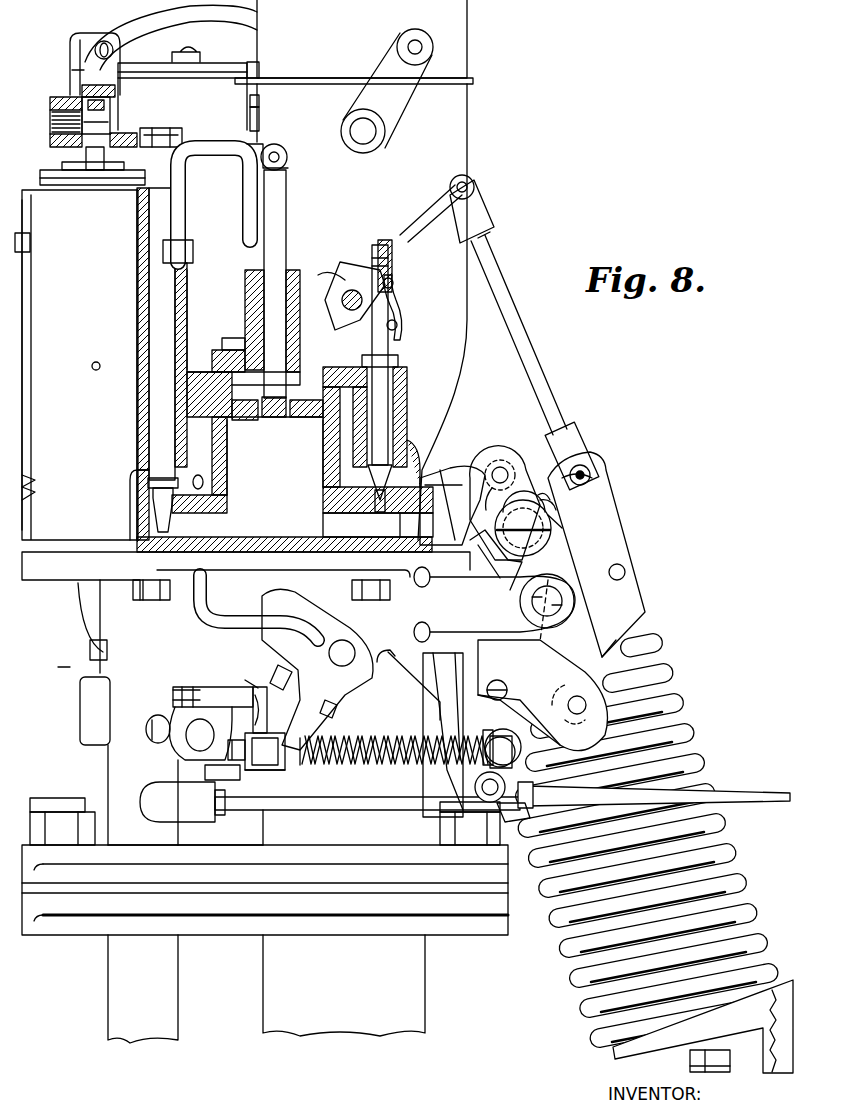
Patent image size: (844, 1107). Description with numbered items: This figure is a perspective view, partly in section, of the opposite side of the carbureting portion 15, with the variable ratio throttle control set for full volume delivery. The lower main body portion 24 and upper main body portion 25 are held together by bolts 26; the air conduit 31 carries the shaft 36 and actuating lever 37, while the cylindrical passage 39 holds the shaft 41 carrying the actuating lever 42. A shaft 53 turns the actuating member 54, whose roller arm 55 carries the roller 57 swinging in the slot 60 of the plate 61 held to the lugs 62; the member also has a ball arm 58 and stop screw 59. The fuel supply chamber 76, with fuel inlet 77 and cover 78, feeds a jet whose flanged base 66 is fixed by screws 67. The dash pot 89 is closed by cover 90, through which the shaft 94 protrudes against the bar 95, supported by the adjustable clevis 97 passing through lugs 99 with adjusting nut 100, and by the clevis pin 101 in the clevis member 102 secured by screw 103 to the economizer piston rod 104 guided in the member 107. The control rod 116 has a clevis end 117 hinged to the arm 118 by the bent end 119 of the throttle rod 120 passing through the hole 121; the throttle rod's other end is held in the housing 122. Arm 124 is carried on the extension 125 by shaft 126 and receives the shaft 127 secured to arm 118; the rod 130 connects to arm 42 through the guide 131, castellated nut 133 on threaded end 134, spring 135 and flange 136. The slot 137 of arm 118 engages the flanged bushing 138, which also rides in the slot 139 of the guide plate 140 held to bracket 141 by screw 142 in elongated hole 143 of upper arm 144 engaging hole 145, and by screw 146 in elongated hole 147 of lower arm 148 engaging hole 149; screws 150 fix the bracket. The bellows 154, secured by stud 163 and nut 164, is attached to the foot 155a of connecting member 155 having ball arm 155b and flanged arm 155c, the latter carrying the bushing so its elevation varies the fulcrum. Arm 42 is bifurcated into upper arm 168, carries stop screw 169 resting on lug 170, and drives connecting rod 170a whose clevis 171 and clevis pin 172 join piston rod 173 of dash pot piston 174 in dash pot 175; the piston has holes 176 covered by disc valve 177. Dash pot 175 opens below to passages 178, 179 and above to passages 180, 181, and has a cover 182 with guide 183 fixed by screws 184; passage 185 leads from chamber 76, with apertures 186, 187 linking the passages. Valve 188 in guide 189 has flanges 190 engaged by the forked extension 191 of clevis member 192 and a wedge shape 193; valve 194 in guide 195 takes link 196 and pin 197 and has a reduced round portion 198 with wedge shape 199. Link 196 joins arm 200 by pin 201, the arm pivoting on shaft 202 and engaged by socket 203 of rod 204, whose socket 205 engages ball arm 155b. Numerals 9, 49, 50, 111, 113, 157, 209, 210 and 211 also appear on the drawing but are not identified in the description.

The frame section 9 is at (64, 660).
The carbureting portion 15 is at (509, 240).
The lower main body portion 24 is at (95, 762).
The upper main body portion 25 is at (470, 152).
The bolts 26 is at (155, 596).
The air conduit 31 is at (354, 94).
The shaft 36 is at (363, 131).
The actuating lever 37 is at (388, 88).
The cylindrical passage 39 is at (269, 832).
The shaft 41 is at (342, 653).
The actuating lever 42 is at (327, 695).
The base portion 49 is at (143, 834).
The curved wall 50 is at (98, 605).
The shaft 53 is at (232, 780).
The actuating member 54 is at (213, 697).
The roller arm 55 is at (252, 718).
The roller 57 is at (245, 680).
The ball arm 58 is at (160, 758).
The stop screw 59 is at (146, 727).
The slot 60 is at (173, 703).
The plate 61 is at (175, 690).
The lower body portion lugs 62 is at (95, 761).
The flanged base 66 is at (30, 482).
The screws 67 is at (30, 497).
The fuel supply chamber 76 is at (28, 358).
The fuel inlet 77 is at (90, 642).
The cover 78 is at (30, 243).
The dash pot 89 is at (182, 104).
The cover 90 is at (160, 70).
The shaft 94 is at (200, 53).
The bar 95 is at (171, 37).
The adjustable clevis 97 is at (260, 66).
The lugs 99 is at (259, 102).
The adjusting nut 100 is at (258, 130).
The clevis pin 101 is at (113, 50).
The clevis member 102 is at (70, 76).
The screw 103 is at (52, 130).
The economizer piston rod 104 is at (86, 154).
The member 107 is at (88, 172).
The canister 111 is at (88, 378).
The base plate 113 is at (63, 572).
The control rod 116 is at (750, 792).
The clevis end 117 is at (537, 795).
The arm 118 is at (448, 777).
The bent end 119 is at (515, 818).
The throttle rod 120 is at (380, 797).
The hole 121 is at (505, 783).
The housing 122 is at (182, 802).
The arm 124 is at (543, 695).
The extension 125 is at (366, 601).
The shaft 126 is at (562, 603).
The shaft 127 is at (500, 680).
The rod 130 is at (395, 736).
The guide 131 is at (265, 751).
The castellated nut 133 is at (266, 770).
The threaded end 134 is at (228, 748).
The spring 135 is at (318, 762).
The flange 136 is at (500, 730).
The slot 137 is at (528, 500).
The flanged bushing 138 is at (552, 515).
The slot 139 is at (568, 670).
The guide plate 140 is at (487, 455).
The bracket 141 is at (443, 651).
The screw 142 is at (503, 467).
The elongated hole 143 is at (520, 462).
The upper arm 144 is at (463, 470).
The hole 145 is at (503, 499).
The screw 146 is at (580, 704).
The elongated hole 147 is at (570, 695).
The lower arm 148 is at (519, 719).
The hole 149 is at (576, 714).
The screws 150 is at (425, 587).
The air-tight bellows 154 is at (669, 643).
The connecting member 155 is at (610, 542).
The foot 155a is at (614, 625).
The ball arm 155b is at (590, 498).
The flanged arm 155c is at (562, 526).
The hole 157 is at (626, 570).
The stud 163 is at (728, 1068).
The nut 164 is at (730, 1056).
The upper arm 168 is at (317, 669).
The stop screw 169 is at (280, 672).
The lug 170 is at (405, 670).
The connecting rod 170a is at (218, 162).
The clevis 171 is at (278, 147).
The clevis pin 172 is at (291, 158).
The piston rod 173 is at (272, 233).
The dash pot piston 174 is at (228, 440).
The dash pot 175 is at (275, 462).
The holes 176 is at (255, 438).
The disc valve 177 is at (288, 405).
The passage 178 is at (215, 530).
The passage 179 is at (378, 525).
The passage 180 is at (236, 442).
The passage 181 is at (345, 427).
The cover 182 is at (213, 355).
The guide 183 is at (252, 308).
The screws 184 is at (232, 340).
The passage 185 is at (198, 475).
The aperture 186 is at (137, 505).
The aperture 187 is at (384, 514).
The valve 188 is at (155, 405).
The guide 189 is at (190, 298).
The flanges 190 is at (182, 145).
The forked extension 191 is at (133, 135).
The clevis member 192 is at (140, 488).
The wedge shape 193 is at (172, 525).
The valve 194 is at (392, 415).
The guide 195 is at (403, 392).
The link 196 is at (400, 312).
The pin 197 is at (398, 326).
The reduced round portion 198 is at (412, 450).
The wedge shape 199 is at (372, 480).
The arm 200 is at (402, 240).
The pin 201 is at (395, 283).
The shaft 202 is at (347, 310).
The socket 203 is at (488, 215).
The rod 204 is at (535, 330).
The socket 205 is at (592, 450).
The base 209 is at (508, 890).
The plate 210 is at (62, 806).
The block 211 is at (265, 828).